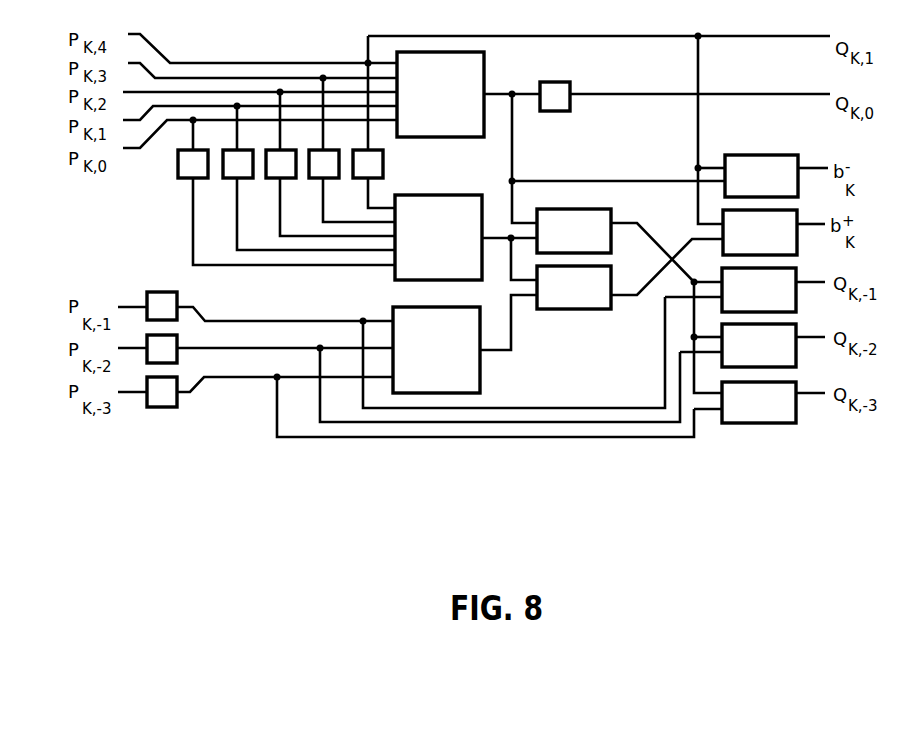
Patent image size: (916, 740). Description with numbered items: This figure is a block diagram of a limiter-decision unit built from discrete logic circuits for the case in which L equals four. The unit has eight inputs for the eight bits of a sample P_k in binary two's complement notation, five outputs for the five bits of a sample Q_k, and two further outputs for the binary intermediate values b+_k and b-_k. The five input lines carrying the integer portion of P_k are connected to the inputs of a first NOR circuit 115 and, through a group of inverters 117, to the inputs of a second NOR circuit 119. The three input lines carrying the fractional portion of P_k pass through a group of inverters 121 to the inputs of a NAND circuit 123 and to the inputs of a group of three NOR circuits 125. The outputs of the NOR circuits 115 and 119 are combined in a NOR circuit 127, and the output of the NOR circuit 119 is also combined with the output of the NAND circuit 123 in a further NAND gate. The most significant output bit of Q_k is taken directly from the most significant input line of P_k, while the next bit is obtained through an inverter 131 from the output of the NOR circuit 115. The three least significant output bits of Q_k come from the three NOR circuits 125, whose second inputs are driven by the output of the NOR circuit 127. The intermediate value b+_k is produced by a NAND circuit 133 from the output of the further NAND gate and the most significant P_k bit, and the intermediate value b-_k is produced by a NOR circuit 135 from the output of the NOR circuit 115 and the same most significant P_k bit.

The first NOR circuit 115 is at (487, 79).
The group of inverters 117 is at (402, 164).
The second NOR circuit 119 is at (440, 193).
The group of inverters 121 is at (179, 430).
The NAND circuit 123 is at (595, 310).
The group of three NOR circuits 125 is at (766, 446).
The NOR circuit 127 is at (612, 209).
The inverter 131 is at (573, 80).
The NAND circuit 133 is at (798, 242).
The NOR circuit 135 is at (782, 153).